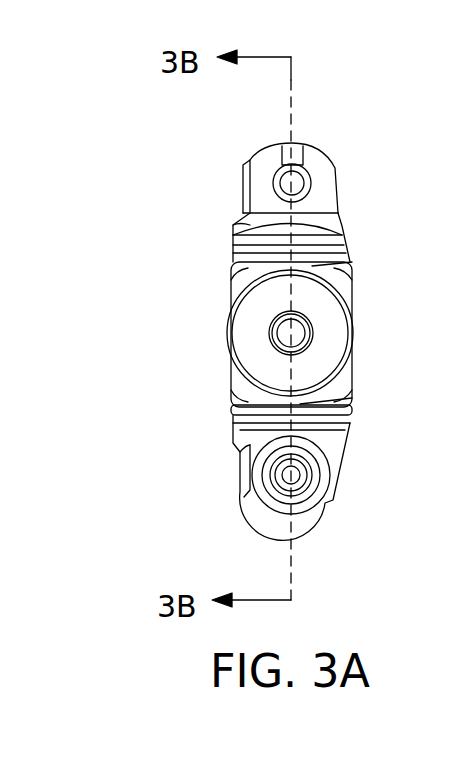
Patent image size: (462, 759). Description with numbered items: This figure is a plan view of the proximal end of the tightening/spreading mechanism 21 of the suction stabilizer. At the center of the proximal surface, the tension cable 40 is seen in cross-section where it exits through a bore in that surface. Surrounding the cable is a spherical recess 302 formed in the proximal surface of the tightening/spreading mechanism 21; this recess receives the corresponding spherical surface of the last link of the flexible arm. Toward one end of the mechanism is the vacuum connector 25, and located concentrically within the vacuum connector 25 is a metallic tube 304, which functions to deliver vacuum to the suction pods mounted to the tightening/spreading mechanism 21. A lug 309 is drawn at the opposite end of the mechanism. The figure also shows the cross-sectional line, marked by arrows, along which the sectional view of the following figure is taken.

The tightening/spreading mechanism 21 is at (215, 337).
The vacuum connector 25 is at (315, 508).
The tension cable 40 is at (297, 327).
The spherical recess 302 is at (327, 340).
The metallic tube 304 is at (293, 473).
The upper mounting lug 309 is at (323, 193).